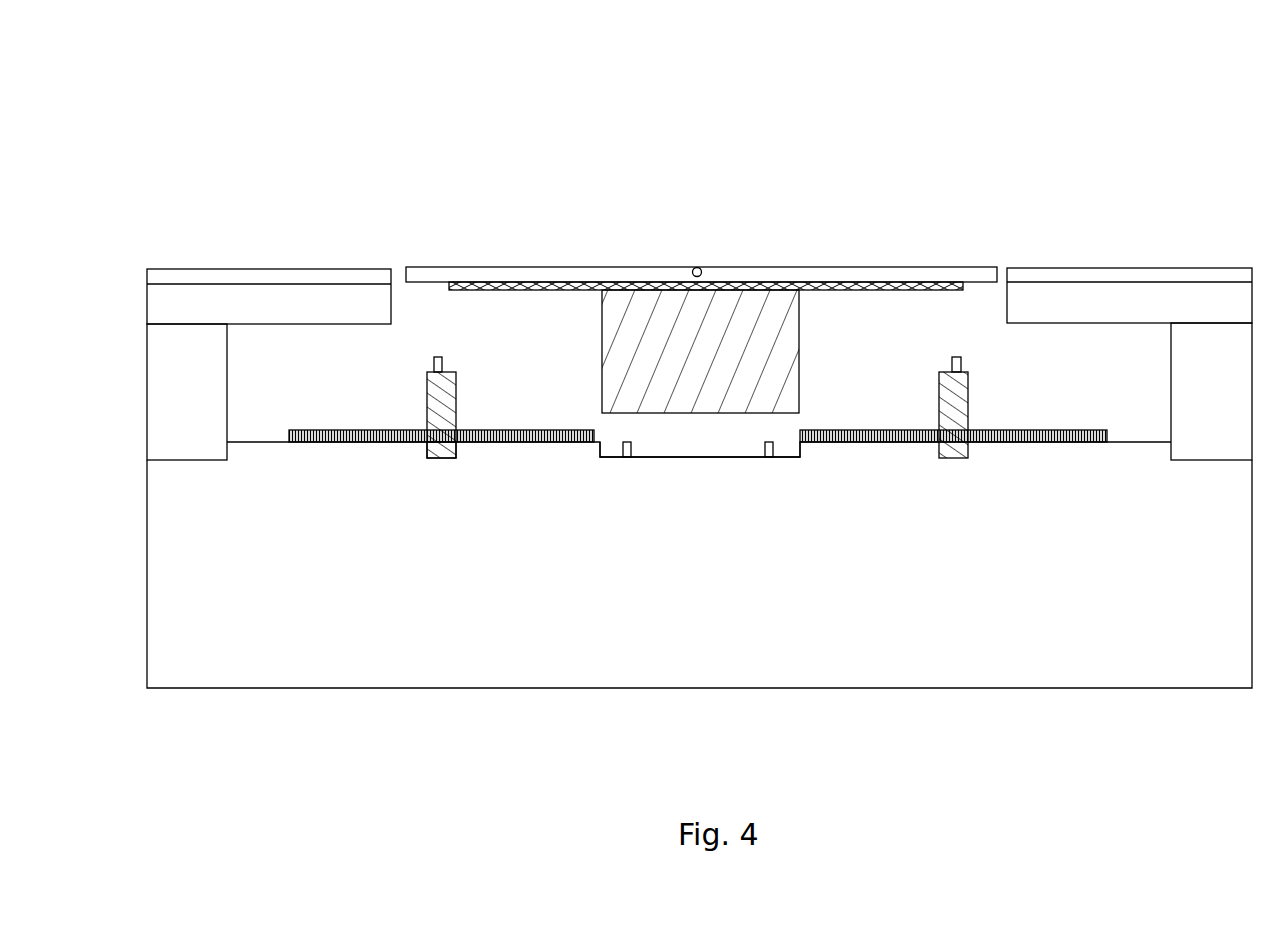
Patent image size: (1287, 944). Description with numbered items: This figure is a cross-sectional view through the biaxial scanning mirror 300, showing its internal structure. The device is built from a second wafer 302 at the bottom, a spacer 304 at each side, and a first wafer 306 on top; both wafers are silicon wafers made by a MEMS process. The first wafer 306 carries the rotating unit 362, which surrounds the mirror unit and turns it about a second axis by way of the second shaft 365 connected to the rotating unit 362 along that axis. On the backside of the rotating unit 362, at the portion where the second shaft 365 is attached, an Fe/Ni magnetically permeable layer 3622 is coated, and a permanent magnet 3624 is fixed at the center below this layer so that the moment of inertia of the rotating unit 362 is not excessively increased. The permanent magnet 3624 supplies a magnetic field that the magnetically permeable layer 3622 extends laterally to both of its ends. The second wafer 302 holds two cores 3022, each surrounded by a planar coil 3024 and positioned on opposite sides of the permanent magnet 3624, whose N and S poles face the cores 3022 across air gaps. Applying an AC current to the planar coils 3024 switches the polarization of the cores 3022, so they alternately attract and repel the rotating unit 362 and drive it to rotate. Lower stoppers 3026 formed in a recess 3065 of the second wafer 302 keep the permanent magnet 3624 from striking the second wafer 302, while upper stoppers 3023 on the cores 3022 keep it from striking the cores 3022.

The biaxial scanning mirror 300 is at (213, 49).
The second wafer 302 is at (1087, 613).
The core 3022 is at (436, 433).
The upper stopper 3023 is at (433, 363).
The planar coil 3024 is at (528, 436).
The lower stopper 3026 is at (768, 457).
The recess 3065 is at (693, 445).
The spacer 304 is at (158, 400).
The first wafer 306 is at (268, 277).
The rotating unit 362 is at (740, 330).
The magnetically permeable layer 3622 is at (550, 288).
The permanent magnet 3624 is at (800, 288).
The second shaft 365 is at (697, 267).